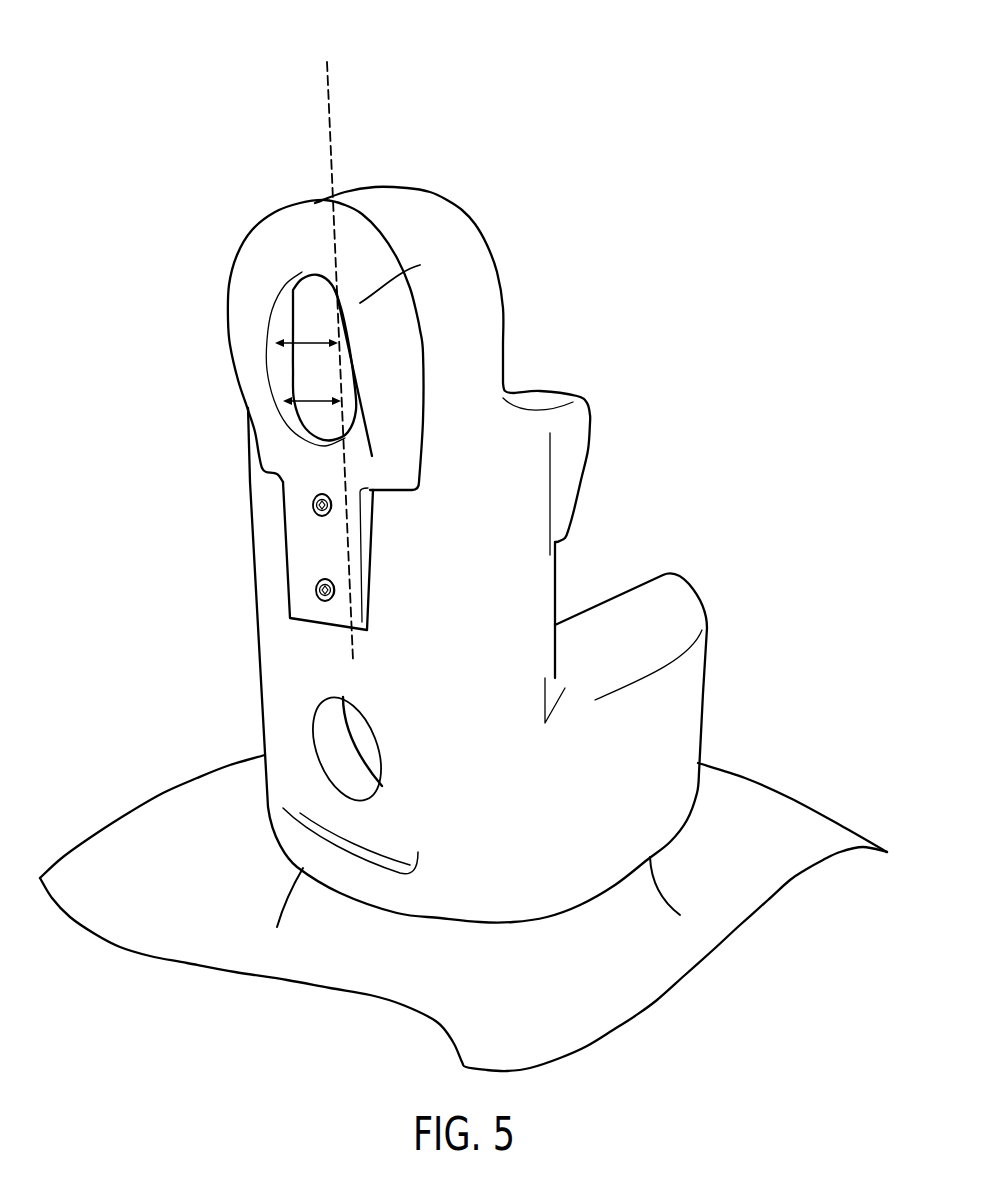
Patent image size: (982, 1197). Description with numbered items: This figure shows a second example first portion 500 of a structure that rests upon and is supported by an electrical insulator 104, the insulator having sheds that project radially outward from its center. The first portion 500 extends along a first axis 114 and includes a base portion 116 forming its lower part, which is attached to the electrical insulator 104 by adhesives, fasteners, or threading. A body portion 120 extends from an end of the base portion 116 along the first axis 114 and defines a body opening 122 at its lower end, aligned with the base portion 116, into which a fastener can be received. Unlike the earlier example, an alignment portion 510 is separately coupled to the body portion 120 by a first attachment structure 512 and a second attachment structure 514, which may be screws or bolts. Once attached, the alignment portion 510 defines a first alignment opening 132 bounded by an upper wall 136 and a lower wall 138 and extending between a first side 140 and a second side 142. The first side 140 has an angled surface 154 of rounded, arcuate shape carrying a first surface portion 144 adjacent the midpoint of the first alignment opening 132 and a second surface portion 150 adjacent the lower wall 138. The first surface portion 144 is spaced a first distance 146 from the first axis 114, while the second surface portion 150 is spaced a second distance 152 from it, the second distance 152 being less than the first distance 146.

The first portion 500 is at (150, 71).
The first axis 114 is at (336, 103).
The electrical insulator 104 is at (173, 805).
The base portion 116 is at (677, 722).
The body portion 120 is at (520, 523).
The body opening 122 is at (367, 745).
The first alignment opening 132 is at (303, 363).
The upper wall 136 is at (314, 275).
The lower wall 138 is at (318, 430).
The first side 140 is at (248, 283).
The second side 142 is at (423, 365).
The first surface portion 144 is at (275, 343).
The first distance 146 is at (298, 338).
The second surface portion 150 is at (272, 407).
The second distance 152 is at (310, 408).
The angled surface 154 is at (408, 280).
The alignment portion 510 is at (366, 341).
The first attachment structure 512 is at (333, 508).
The second attachment structure 514 is at (337, 592).